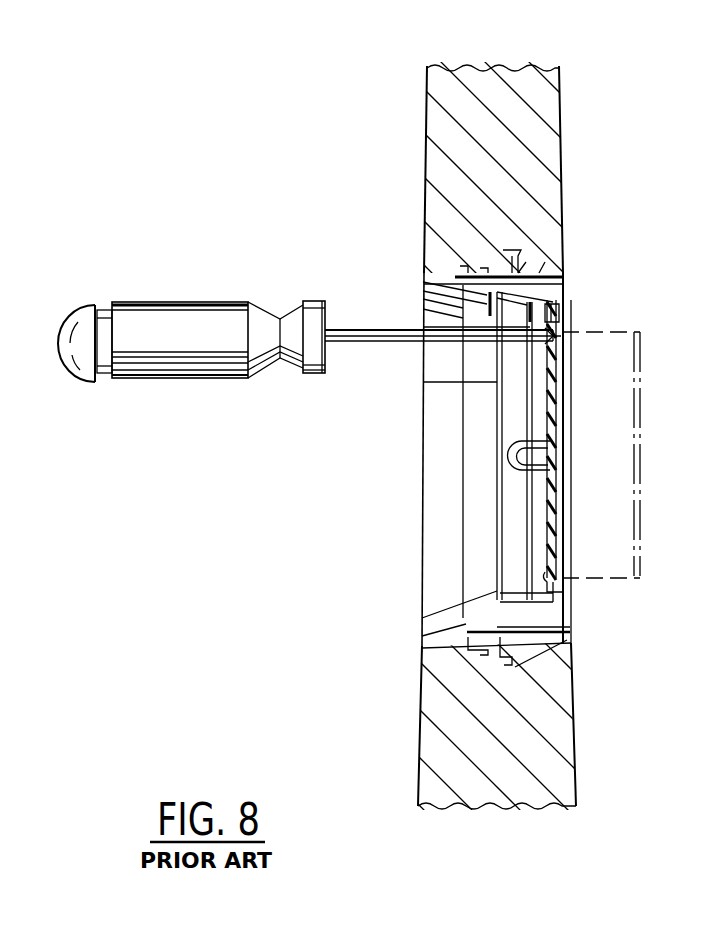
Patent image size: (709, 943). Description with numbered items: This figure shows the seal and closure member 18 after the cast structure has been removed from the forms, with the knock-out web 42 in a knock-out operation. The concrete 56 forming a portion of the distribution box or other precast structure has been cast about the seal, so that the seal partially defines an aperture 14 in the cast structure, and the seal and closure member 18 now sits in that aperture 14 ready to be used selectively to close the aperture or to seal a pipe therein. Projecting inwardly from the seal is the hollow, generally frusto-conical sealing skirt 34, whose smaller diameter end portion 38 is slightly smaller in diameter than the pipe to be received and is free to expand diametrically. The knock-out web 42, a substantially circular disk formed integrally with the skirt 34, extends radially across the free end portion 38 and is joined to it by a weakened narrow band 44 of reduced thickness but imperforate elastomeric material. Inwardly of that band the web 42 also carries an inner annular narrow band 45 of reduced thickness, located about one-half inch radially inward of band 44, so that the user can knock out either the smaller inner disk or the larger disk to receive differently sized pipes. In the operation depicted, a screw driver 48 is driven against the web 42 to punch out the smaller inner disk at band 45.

The concrete 56 is at (549, 145).
The aperture 14 is at (432, 282).
The seal and closure member 18 is at (556, 287).
The narrow band of reduced thickness 44 is at (559, 311).
The inner annular narrow band 45 is at (556, 333).
The knock-out web 42 is at (556, 500).
The smaller diameter end portion 38 is at (570, 607).
The sealing skirt 34 is at (560, 630).
The screw driver 48 is at (203, 302).